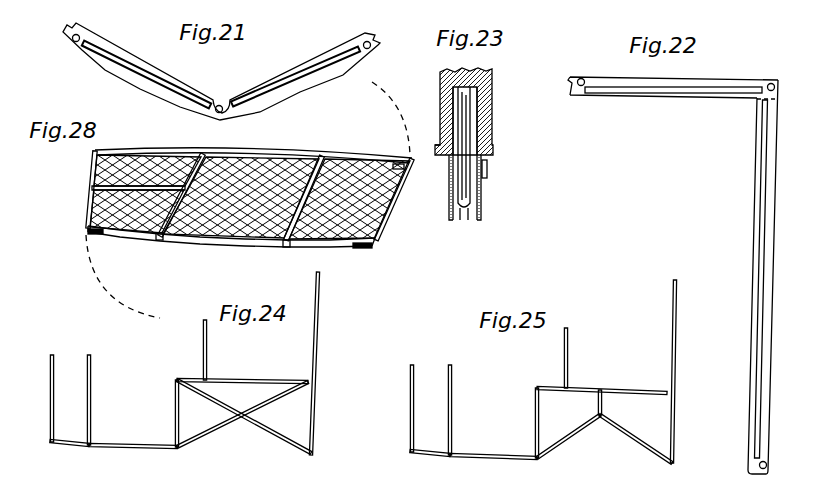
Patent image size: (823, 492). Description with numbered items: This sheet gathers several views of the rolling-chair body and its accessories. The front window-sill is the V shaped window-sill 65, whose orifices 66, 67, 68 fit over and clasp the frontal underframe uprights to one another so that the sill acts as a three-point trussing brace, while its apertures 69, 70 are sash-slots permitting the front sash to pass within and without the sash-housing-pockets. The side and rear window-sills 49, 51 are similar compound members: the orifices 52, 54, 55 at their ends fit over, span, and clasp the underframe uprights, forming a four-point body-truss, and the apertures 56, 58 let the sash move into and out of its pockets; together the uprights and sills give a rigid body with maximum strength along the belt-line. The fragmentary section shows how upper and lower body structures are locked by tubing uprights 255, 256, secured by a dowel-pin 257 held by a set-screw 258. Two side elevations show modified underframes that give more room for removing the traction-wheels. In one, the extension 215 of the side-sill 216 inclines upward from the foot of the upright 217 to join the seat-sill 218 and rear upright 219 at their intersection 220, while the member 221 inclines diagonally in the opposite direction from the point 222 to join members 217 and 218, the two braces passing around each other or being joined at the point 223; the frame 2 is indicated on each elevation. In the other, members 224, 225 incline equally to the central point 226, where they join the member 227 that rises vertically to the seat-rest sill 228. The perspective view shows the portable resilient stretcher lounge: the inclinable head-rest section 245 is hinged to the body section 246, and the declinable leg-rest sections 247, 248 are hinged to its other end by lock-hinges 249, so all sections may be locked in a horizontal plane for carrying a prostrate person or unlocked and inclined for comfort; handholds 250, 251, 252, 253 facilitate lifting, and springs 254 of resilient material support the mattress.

In FIG. 24, the frame 2 is at (128, 382).
In FIG. 25, the frame 2 is at (488, 393).
In FIG. 23, the compound side window-sill 49 is at (493, 149).
In FIG. 22, the compound side window-sill 49 is at (690, 82).
In FIG. 22, the compound rear window-sill 51 is at (766, 320).
In FIG. 22, the orifice 52 is at (583, 78).
In FIG. 22, the orifice 54 is at (776, 80).
In FIG. 22, the orifice 55 is at (766, 463).
In FIG. 22, the aperture 56 is at (630, 93).
In FIG. 22, the aperture 58 is at (765, 197).
In FIG. 21, the V shaped window-sill 65 is at (138, 88).
In FIG. 21, the orifice 66 is at (78, 36).
In FIG. 21, the orifice 67 is at (221, 105).
In FIG. 21, the orifice 68 is at (372, 47).
In FIG. 21, the aperture 69 is at (174, 90).
In FIG. 21, the aperture 70 is at (323, 67).
In FIG. 24, the extension 215 is at (202, 442).
In FIG. 24, the side-sill 216 is at (125, 449).
In FIG. 25, the side-sill 216 is at (475, 453).
In FIG. 24, the upright 217 is at (175, 410).
In FIG. 24, the seat-sill 218 is at (231, 378).
In FIG. 24, the rear upright 219 is at (316, 338).
In FIG. 24, the intersection 220 is at (312, 383).
In FIG. 24, the member 221 is at (258, 424).
In FIG. 24, the point 222 is at (313, 452).
In FIG. 24, the point 223 is at (242, 420).
In FIG. 25, the member 224 is at (572, 437).
In FIG. 25, the member 225 is at (630, 440).
In FIG. 25, the central point 226 is at (600, 418).
In FIG. 25, the member 227 is at (604, 405).
In FIG. 25, the seat-rest sill 228 is at (622, 390).
In FIG. 28, the head-rest section 245 is at (418, 198).
In FIG. 28, the body section 246 is at (248, 242).
In FIG. 28, the leg-rest section 247 is at (92, 170).
In FIG. 28, the leg-rest section 248 is at (88, 210).
In FIG. 28, the lock-hinge 249 is at (160, 240).
In FIG. 28, the handhold 250 is at (100, 150).
In FIG. 28, the handhold 251 is at (97, 234).
In FIG. 28, the handhold 252 is at (400, 164).
In FIG. 28, the handhold 253 is at (358, 248).
In FIG. 28, the springs 254 is at (165, 190).
In FIG. 23, the tubing upright 255 is at (478, 103).
In FIG. 23, the tubing upright 256 is at (461, 221).
In FIG. 23, the dowel-pin 257 is at (478, 190).
In FIG. 23, the set-screw 258 is at (488, 167).